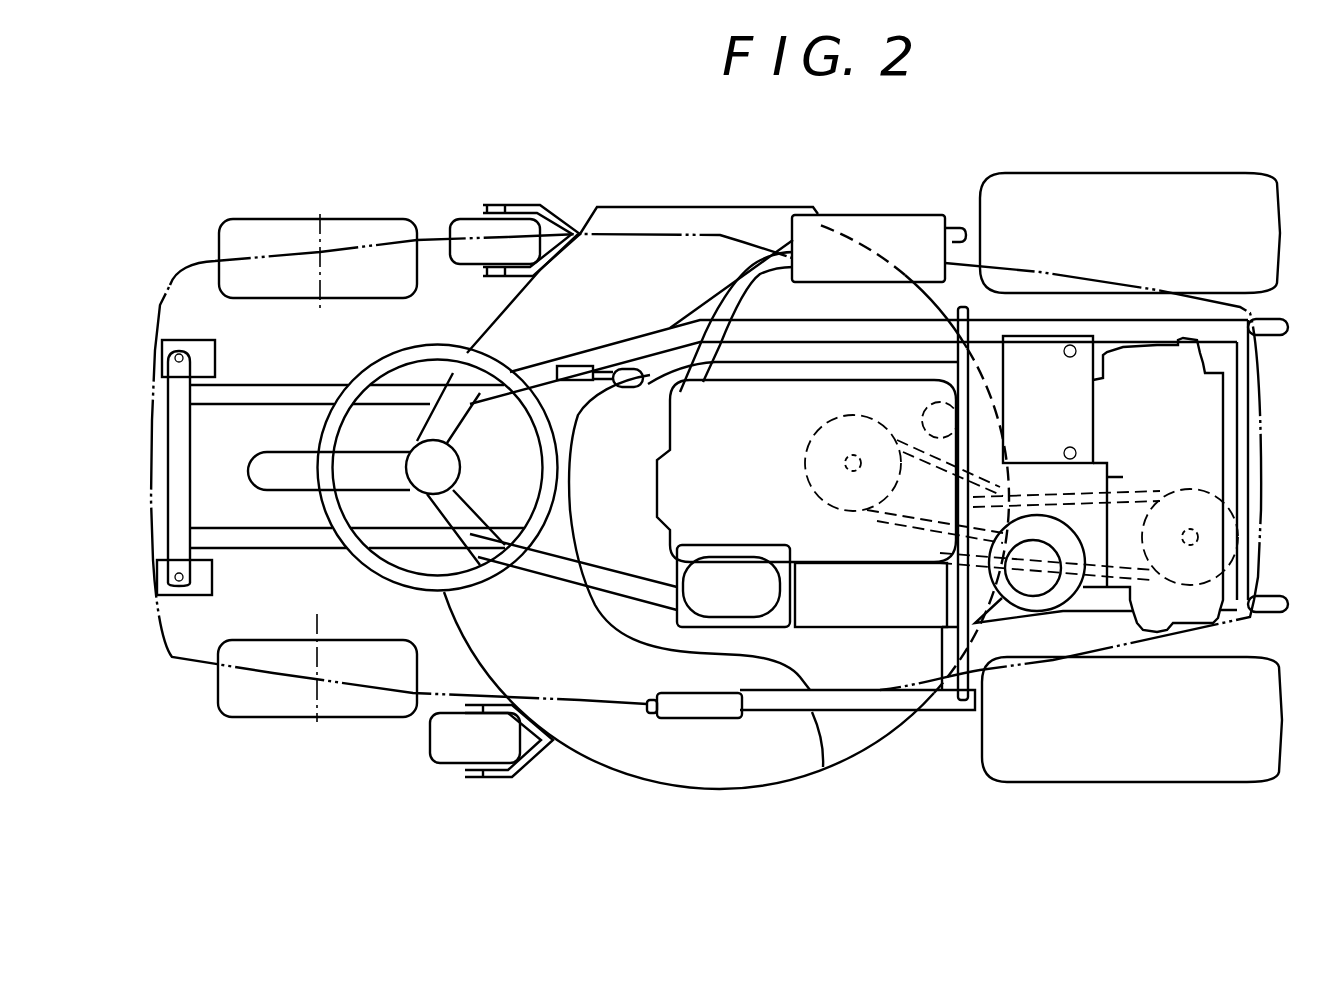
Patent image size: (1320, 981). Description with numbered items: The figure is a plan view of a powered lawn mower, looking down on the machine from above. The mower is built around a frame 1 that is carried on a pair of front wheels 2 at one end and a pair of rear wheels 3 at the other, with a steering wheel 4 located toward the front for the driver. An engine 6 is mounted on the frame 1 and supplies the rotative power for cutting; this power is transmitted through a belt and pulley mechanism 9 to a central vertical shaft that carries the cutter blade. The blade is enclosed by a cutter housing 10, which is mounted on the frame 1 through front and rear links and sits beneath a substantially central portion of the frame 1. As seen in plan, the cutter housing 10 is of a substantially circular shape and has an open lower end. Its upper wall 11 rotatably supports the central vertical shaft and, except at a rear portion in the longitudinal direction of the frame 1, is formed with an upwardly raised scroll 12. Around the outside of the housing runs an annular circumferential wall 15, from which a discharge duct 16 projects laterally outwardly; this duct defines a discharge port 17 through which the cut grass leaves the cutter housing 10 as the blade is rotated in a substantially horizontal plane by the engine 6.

The frame 1 is at (178, 660).
The front wheels 2 is at (281, 237).
The rear wheels 3 is at (1167, 198).
The steering wheel 4 is at (548, 470).
The engine 6 is at (857, 533).
The belt and pulley mechanism 9 is at (1155, 490).
The cutter housing 10 is at (672, 506).
The upper wall 11 is at (853, 733).
The scroll 12 is at (602, 623).
The annular circumferential wall 15 is at (445, 597).
The discharge duct 16 is at (580, 230).
The discharge port 17 is at (688, 206).